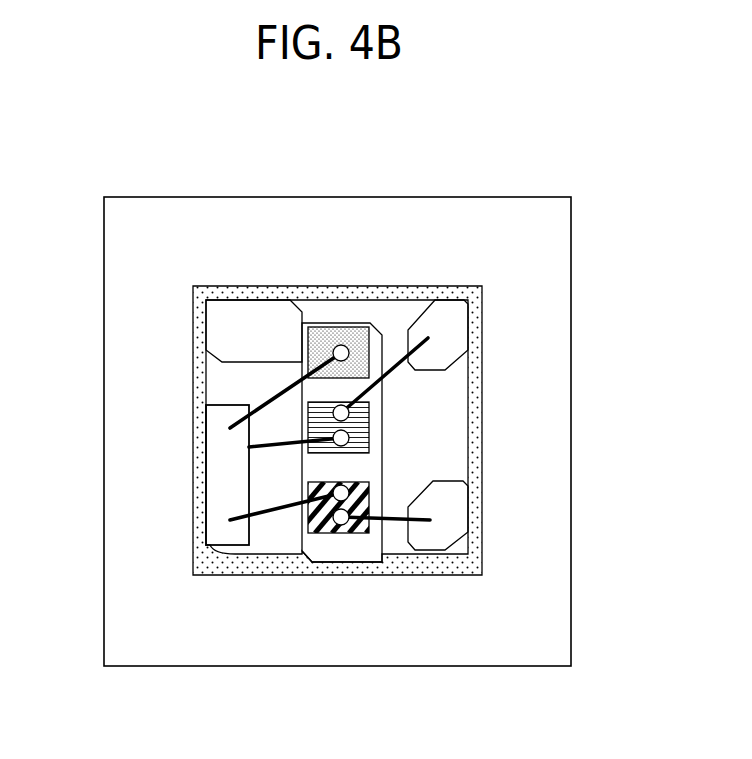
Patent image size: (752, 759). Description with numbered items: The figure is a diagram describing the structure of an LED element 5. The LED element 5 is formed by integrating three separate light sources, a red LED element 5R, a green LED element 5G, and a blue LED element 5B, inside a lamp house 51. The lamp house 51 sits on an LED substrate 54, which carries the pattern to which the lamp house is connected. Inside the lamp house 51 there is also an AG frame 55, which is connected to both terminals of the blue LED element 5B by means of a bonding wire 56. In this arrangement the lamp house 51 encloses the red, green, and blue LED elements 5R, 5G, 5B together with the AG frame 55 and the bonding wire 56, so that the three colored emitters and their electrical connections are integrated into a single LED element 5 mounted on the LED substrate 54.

The LED element 5 is at (548, 173).
The lamp house 51 is at (203, 557).
The LED substrate 54 is at (488, 645).
The AG frame 55 is at (222, 480).
The bonding wire 56 is at (275, 397).
The red LED element 5R is at (370, 368).
The green LED element 5G is at (370, 426).
The blue LED element 5B is at (370, 497).